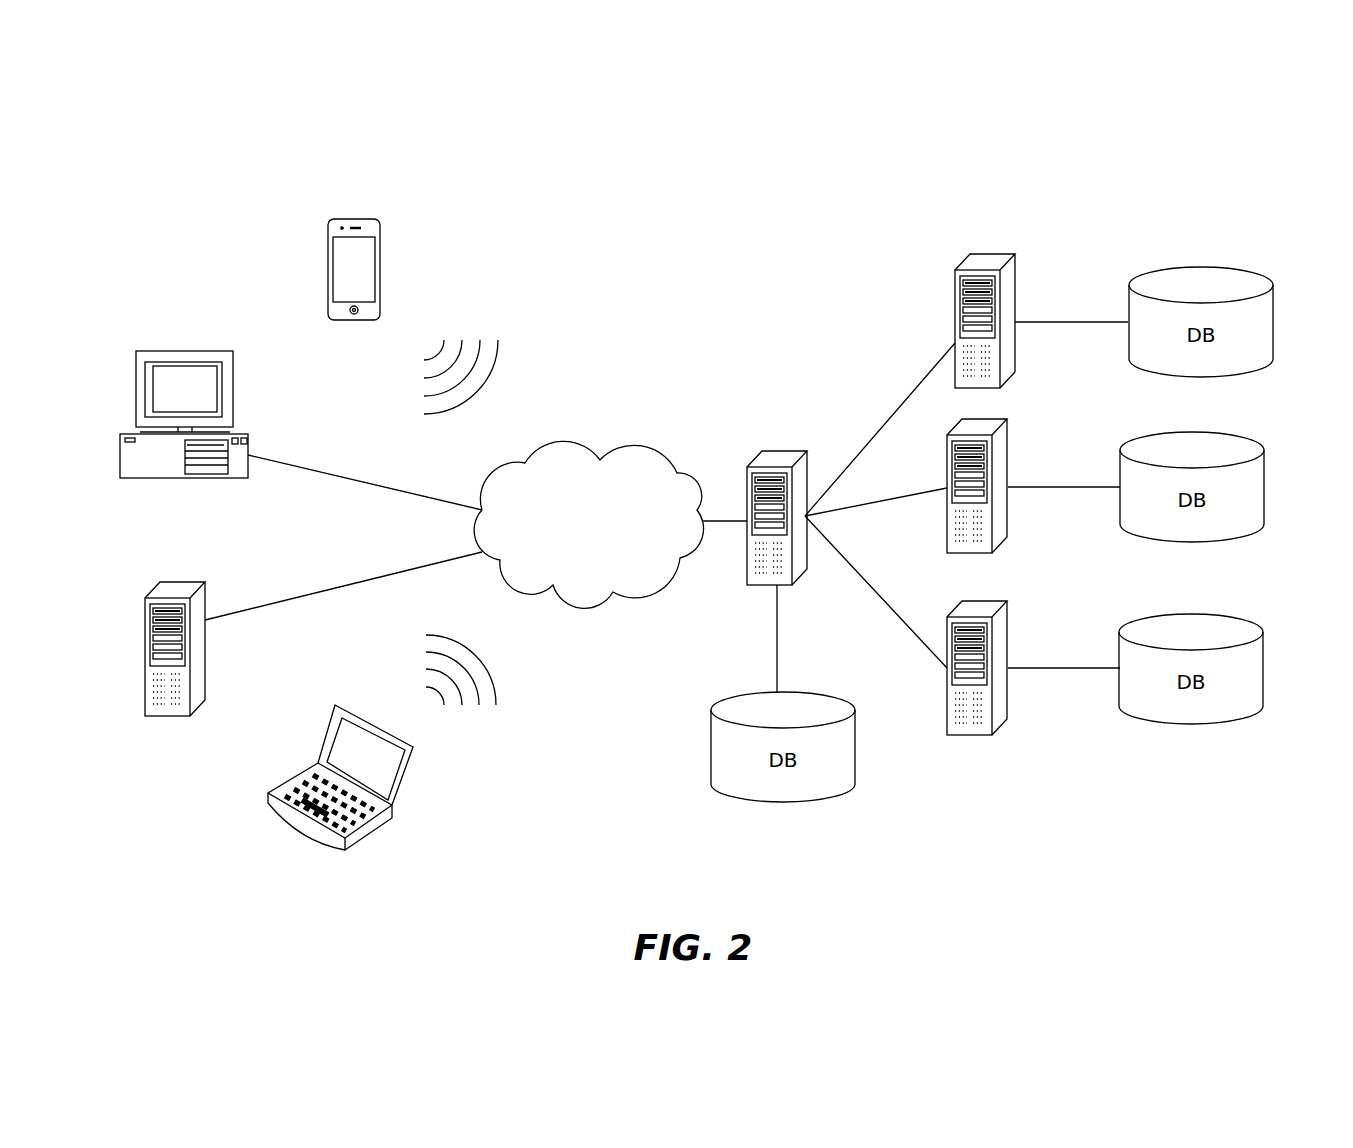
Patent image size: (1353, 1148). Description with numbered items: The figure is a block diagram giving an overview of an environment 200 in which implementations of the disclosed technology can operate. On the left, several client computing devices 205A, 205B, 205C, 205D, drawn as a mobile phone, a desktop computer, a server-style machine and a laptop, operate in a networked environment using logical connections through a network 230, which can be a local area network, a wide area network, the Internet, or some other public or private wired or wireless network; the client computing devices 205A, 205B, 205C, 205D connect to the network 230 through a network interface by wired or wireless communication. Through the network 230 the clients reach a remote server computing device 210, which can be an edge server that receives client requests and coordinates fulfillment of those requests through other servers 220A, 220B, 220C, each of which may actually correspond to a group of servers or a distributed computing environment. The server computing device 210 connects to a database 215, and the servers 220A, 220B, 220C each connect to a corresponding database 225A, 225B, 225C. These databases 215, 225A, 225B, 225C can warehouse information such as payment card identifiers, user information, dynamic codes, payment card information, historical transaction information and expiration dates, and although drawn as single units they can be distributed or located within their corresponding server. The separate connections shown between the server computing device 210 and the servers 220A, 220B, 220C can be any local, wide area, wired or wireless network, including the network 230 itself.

The environment 200 is at (1078, 134).
The client computing device 205A is at (369, 219).
The client computing device 205B is at (228, 351).
The client computing device 205C is at (200, 584).
The client computing device 205D is at (408, 778).
The server computing device 210 is at (787, 446).
The database 215 is at (832, 696).
The server 220A is at (1013, 257).
The server 220B is at (1005, 421).
The server 220C is at (1005, 601).
The database 225A is at (1198, 268).
The database 225B is at (1190, 432).
The database 225C is at (1189, 613).
The network 230 is at (645, 447).